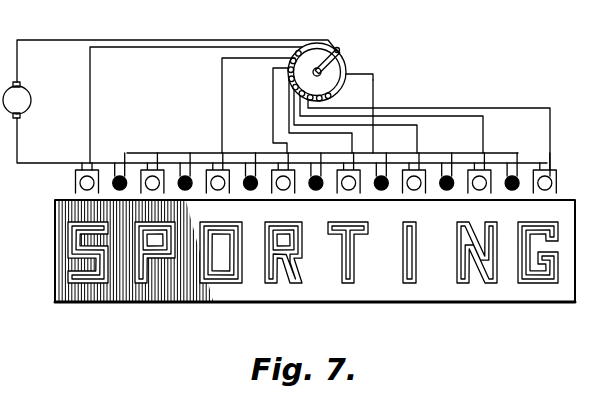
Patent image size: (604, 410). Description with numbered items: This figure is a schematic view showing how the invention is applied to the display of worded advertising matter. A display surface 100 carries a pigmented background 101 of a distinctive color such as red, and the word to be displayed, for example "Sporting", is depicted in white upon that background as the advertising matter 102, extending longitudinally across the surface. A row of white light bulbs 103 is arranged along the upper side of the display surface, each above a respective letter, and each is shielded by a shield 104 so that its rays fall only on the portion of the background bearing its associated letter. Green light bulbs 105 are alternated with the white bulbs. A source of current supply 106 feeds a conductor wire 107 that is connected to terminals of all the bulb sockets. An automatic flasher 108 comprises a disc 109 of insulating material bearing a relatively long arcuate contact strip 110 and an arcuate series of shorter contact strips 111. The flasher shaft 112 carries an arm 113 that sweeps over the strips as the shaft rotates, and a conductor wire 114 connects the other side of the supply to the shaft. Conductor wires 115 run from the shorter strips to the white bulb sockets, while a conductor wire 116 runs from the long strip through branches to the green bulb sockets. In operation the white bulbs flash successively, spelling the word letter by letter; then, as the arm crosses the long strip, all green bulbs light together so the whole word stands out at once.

The display surface 100 is at (315, 271).
The background 101 is at (124, 301).
The advertising matter 102 is at (228, 278).
The white light bulbs 103 is at (92, 178).
The shield 104 is at (75, 186).
The green light bulbs 105 is at (116, 176).
The source of current supply 106 is at (30, 94).
The conductor wire 107 is at (47, 162).
The automatic flasher 108 is at (347, 63).
The disc 109 is at (332, 81).
The arcuate contact strip 110 is at (362, 74).
The contact strips 111 is at (290, 78).
The shaft 112 is at (340, 51).
The arm 113 is at (329, 41).
The conductor wire 114 is at (70, 40).
The conductor wires 115 is at (184, 48).
The conductor wire 116 is at (374, 97).